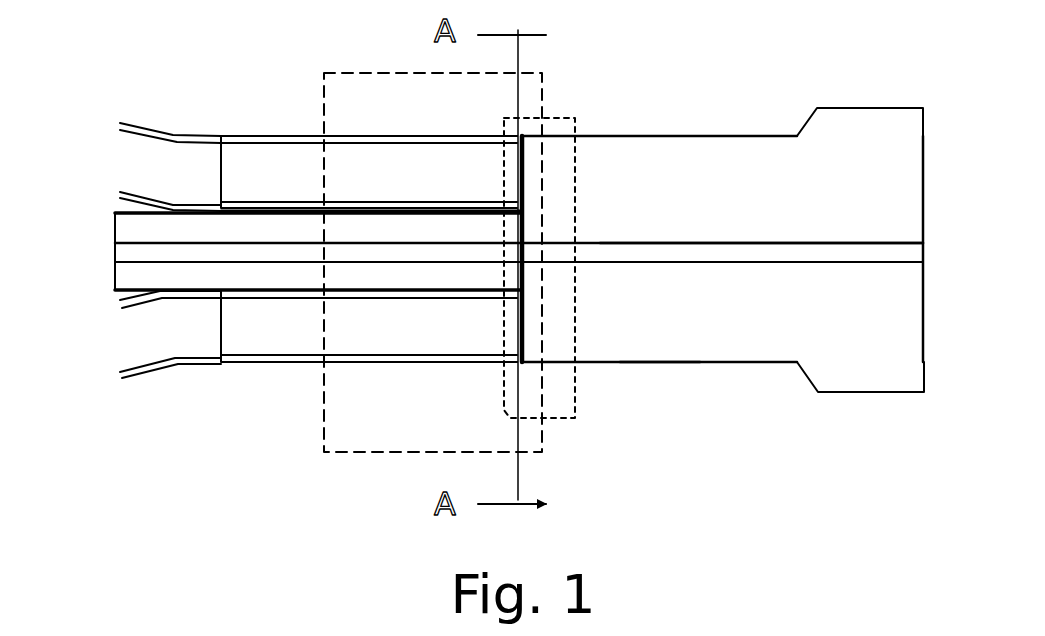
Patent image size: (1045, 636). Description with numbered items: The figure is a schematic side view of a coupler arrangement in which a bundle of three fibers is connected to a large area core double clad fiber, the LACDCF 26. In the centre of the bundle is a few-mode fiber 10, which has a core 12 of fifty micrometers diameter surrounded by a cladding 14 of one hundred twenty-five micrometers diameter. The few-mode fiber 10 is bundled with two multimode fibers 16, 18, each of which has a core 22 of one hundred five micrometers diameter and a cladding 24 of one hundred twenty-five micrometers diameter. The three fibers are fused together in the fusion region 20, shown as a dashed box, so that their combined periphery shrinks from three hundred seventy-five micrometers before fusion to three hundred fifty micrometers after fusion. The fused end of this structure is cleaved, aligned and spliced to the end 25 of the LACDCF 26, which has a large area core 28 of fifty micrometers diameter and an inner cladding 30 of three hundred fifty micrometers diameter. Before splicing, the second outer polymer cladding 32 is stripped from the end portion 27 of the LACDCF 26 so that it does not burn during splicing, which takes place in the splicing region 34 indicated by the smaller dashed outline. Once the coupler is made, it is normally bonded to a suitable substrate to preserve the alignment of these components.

The few-mode fiber 10 is at (104, 220).
The core 12 is at (140, 250).
The cladding 14 is at (277, 275).
The multimode fiber 16 is at (260, 127).
The multimode fiber 18 is at (292, 370).
The fusion region 20 is at (372, 88).
The core 22 is at (252, 163).
The cladding 24 is at (403, 138).
The end 25 is at (525, 187).
The LACDCF 26 is at (853, 98).
The end portion 27 is at (636, 365).
The large area core 28 is at (717, 250).
The inner cladding 30 is at (700, 155).
The second outer polymer cladding 32 is at (860, 380).
The splicing region 34 is at (575, 418).